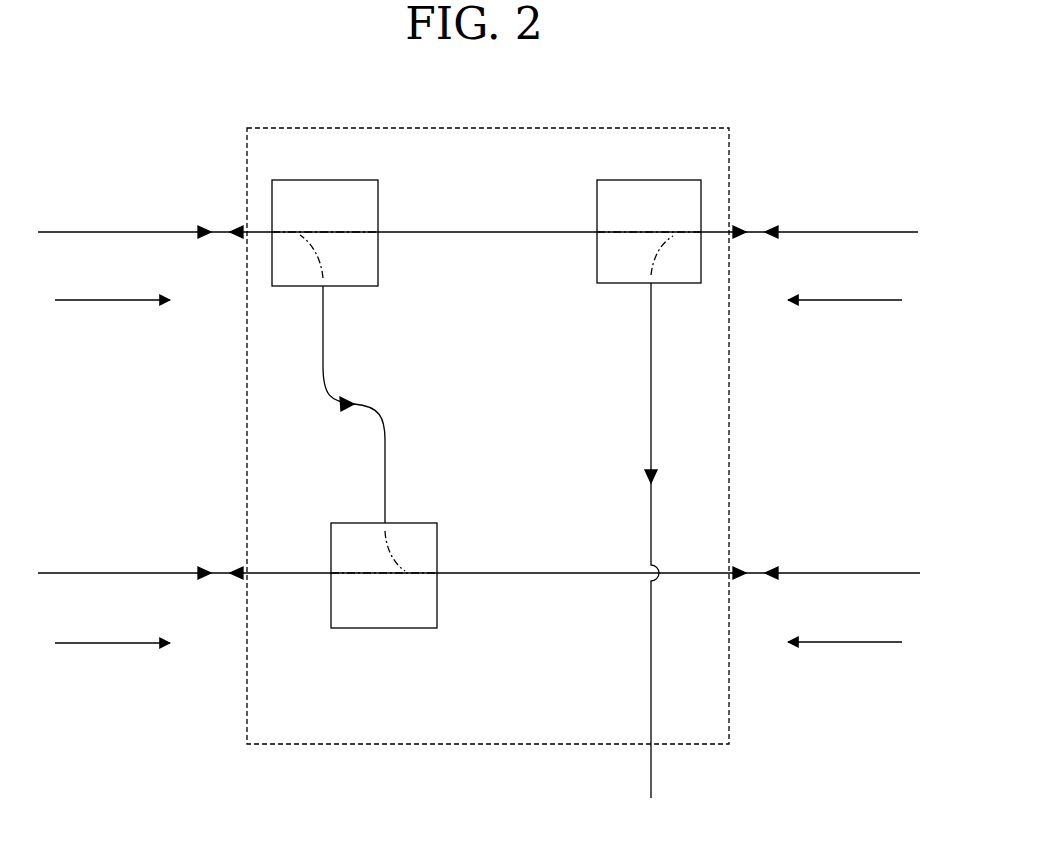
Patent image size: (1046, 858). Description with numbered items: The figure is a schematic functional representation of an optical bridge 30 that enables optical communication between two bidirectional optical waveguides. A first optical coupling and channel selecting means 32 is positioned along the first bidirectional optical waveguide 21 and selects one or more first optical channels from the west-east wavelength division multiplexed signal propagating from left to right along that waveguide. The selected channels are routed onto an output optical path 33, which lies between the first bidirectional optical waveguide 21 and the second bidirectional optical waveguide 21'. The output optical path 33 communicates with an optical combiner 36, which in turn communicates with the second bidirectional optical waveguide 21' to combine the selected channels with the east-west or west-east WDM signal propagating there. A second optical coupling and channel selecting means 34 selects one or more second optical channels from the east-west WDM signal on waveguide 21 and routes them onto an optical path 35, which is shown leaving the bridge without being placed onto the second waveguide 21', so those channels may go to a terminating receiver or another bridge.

The optical bridge 30 is at (694, 116).
The first bidirectional optical waveguide 21 is at (483, 234).
The second bidirectional optical waveguide 21' is at (479, 583).
The first optical coupling and channel selecting means 32 is at (352, 180).
The output optical path 33 is at (377, 404).
The second optical coupling and channel selecting means 34 is at (680, 180).
The optical path 35 is at (651, 545).
The optical combiner 36 is at (438, 523).